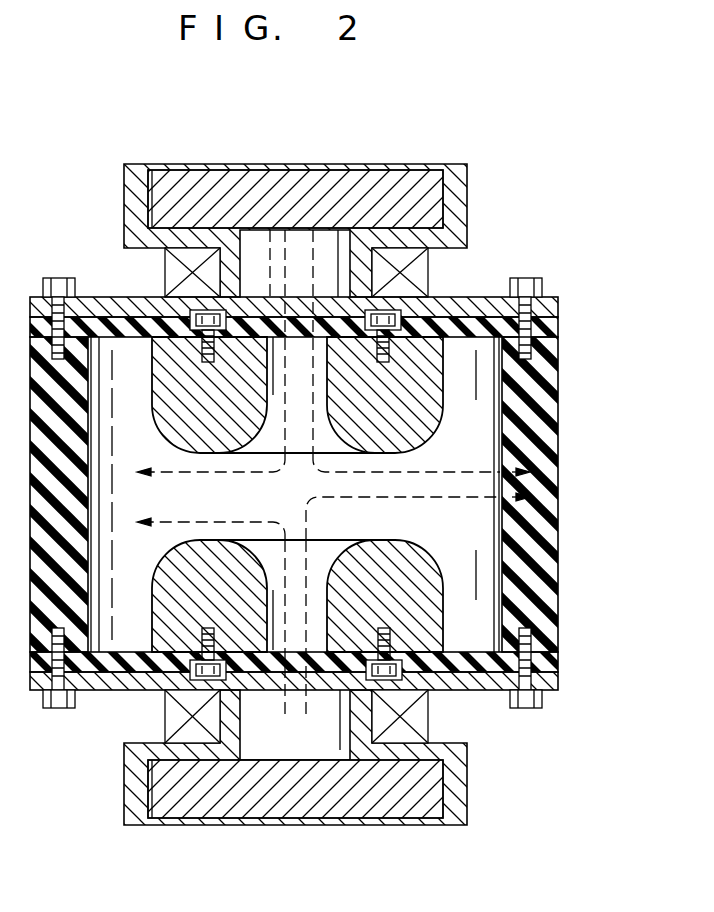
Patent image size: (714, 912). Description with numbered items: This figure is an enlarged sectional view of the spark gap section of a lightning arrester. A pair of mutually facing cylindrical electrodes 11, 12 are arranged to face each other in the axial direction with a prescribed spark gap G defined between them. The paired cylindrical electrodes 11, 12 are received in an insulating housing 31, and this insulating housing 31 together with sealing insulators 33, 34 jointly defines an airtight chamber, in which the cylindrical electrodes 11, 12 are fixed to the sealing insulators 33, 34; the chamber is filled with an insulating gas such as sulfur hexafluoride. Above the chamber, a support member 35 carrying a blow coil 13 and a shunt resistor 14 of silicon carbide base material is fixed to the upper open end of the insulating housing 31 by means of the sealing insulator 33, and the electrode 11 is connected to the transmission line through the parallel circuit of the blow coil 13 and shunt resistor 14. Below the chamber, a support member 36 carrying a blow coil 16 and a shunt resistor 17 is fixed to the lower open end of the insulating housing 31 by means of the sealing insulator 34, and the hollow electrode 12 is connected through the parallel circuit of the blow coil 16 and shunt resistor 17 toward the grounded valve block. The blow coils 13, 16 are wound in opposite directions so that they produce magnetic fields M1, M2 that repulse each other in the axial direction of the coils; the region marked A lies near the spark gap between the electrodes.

The cylindrical electrode 11 is at (430, 401).
The hollow cylindrical electrode 12 is at (428, 617).
The blow coil 13 is at (430, 277).
The shunt resistor 14 is at (414, 172).
The blow coil 16 is at (430, 717).
The shunt resistor 17 is at (410, 802).
The insulating housing 31 is at (556, 566).
The sealing insulator 33 is at (548, 326).
The sealing insulator 34 is at (555, 658).
The support member 35 is at (468, 216).
The support member 36 is at (468, 797).
The spark gap G is at (150, 495).
The discharge region A is at (385, 453).
The magnetic field M1 is at (421, 459).
The magnetic field M2 is at (418, 516).